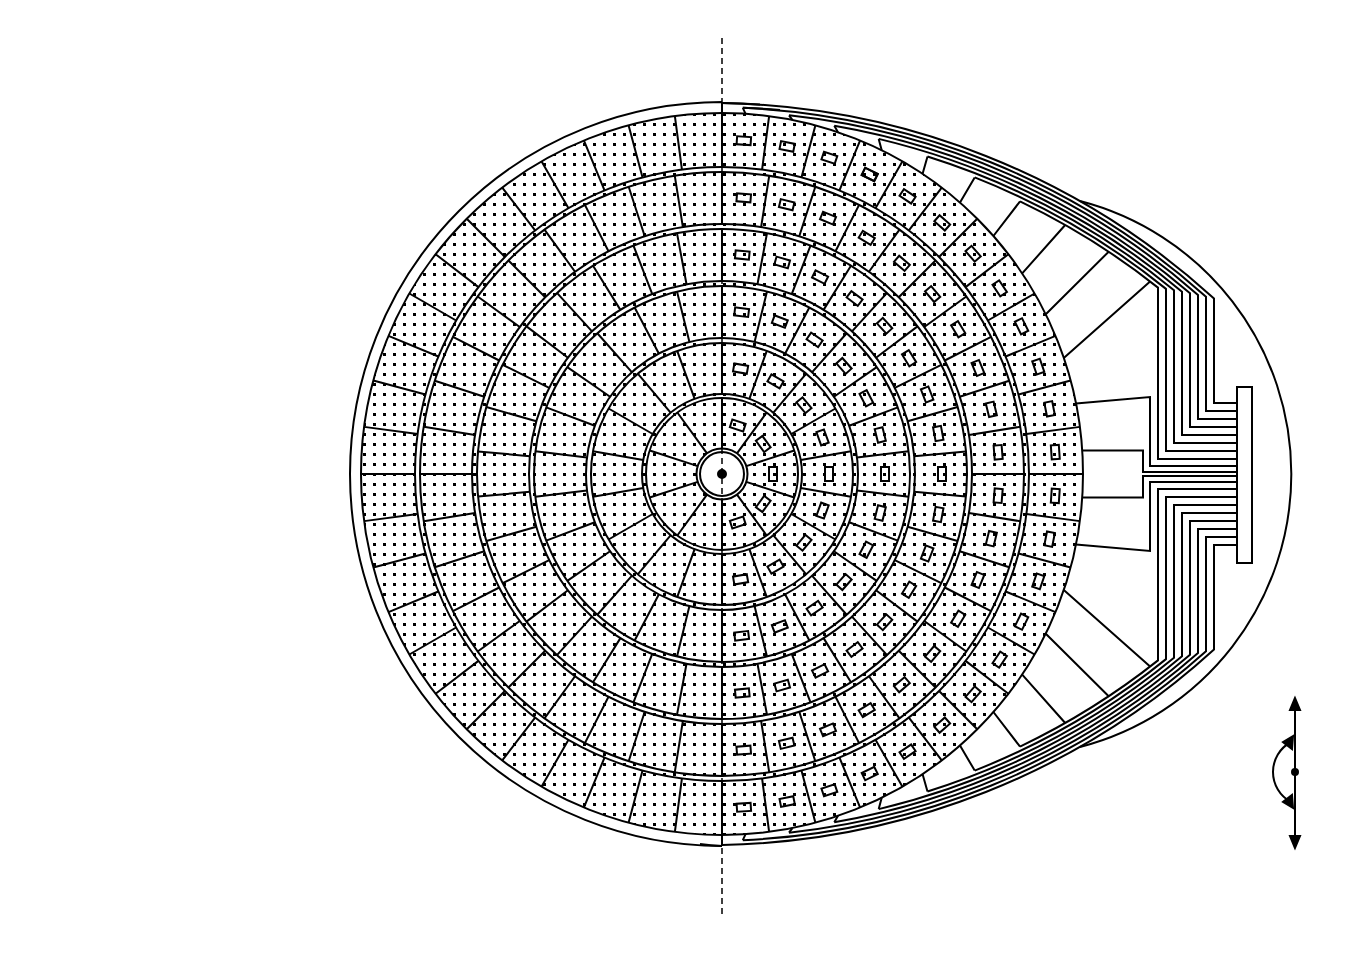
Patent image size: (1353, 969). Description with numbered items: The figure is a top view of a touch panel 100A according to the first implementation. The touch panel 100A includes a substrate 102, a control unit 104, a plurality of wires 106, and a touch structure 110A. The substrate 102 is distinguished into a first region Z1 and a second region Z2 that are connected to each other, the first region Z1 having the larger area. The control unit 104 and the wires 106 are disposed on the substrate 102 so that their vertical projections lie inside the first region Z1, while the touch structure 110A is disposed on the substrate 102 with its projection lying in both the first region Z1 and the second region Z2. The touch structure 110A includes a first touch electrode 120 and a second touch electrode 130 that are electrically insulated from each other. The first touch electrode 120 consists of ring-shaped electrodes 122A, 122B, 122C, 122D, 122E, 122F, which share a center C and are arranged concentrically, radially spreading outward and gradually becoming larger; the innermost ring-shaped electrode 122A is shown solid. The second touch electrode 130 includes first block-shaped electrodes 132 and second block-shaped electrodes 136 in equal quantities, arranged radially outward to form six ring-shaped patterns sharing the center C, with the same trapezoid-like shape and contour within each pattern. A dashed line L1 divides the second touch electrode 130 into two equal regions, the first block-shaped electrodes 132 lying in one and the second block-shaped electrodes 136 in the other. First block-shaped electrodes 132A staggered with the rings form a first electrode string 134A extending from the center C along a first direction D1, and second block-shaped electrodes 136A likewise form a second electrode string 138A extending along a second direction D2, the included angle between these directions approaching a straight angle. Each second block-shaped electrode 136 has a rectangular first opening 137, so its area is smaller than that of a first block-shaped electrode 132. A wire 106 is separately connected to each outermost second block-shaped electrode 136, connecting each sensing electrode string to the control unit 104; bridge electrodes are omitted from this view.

The touch panel 100A is at (262, 95).
The substrate 102 is at (1273, 545).
The control unit 104 is at (1252, 393).
The wires 106 is at (1212, 338).
The touch structure 110A is at (404, 738).
The first touch electrode 120 is at (222, 285).
The ring-shaped electrode 122A is at (515, 474).
The ring-shaped electrode 122B is at (543, 474).
The ring-shaped electrode 122C is at (571, 474).
The ring-shaped electrode 122D is at (600, 474).
The ring-shaped electrode 122E is at (628, 474).
The ring-shaped electrode 122F is at (655, 447).
The second touch electrode 130 is at (1160, 160).
The first block-shaped electrodes 132 is at (520, 768).
The first block-shaped electrodes 132A is at (695, 835).
The first electrode string 134A is at (712, 843).
The second block-shaped electrodes 136 is at (888, 163).
The second block-shaped electrodes 136A is at (748, 127).
The first opening 137 is at (872, 120).
The second electrode string 138A is at (736, 107).
The center C is at (517, 505).
The dashed line L1 is at (718, 70).
The first region Z1 is at (1005, 152).
The second region Z2 is at (478, 190).
The first direction D1 is at (1296, 826).
The second direction D2 is at (1296, 721).